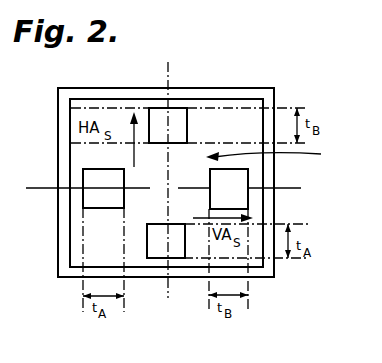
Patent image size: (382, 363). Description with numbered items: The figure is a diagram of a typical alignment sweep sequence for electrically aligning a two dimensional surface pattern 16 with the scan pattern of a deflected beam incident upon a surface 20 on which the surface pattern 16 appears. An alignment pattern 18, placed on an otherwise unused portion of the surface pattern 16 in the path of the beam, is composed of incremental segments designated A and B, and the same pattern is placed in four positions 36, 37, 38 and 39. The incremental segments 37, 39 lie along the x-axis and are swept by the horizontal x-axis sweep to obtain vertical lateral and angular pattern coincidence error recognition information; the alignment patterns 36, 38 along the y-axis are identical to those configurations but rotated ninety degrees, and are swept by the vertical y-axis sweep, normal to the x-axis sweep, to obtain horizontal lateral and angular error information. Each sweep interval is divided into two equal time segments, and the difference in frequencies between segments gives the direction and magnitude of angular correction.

The surface pattern 16 is at (264, 99).
The alignment pattern 18 is at (273, 155).
The surface 20 is at (248, 88).
The alignment pattern position 36 is at (179, 108).
The incremental segment position 37 is at (248, 178).
The alignment pattern position 38 is at (174, 259).
The incremental segment position 39 is at (83, 176).